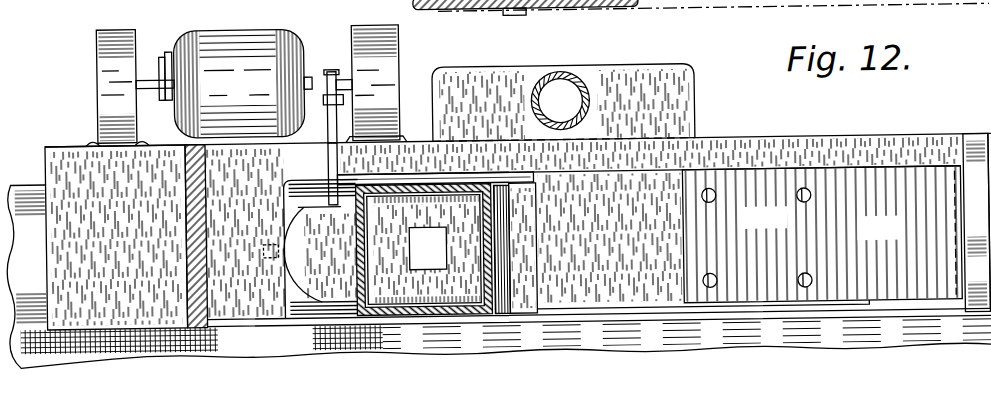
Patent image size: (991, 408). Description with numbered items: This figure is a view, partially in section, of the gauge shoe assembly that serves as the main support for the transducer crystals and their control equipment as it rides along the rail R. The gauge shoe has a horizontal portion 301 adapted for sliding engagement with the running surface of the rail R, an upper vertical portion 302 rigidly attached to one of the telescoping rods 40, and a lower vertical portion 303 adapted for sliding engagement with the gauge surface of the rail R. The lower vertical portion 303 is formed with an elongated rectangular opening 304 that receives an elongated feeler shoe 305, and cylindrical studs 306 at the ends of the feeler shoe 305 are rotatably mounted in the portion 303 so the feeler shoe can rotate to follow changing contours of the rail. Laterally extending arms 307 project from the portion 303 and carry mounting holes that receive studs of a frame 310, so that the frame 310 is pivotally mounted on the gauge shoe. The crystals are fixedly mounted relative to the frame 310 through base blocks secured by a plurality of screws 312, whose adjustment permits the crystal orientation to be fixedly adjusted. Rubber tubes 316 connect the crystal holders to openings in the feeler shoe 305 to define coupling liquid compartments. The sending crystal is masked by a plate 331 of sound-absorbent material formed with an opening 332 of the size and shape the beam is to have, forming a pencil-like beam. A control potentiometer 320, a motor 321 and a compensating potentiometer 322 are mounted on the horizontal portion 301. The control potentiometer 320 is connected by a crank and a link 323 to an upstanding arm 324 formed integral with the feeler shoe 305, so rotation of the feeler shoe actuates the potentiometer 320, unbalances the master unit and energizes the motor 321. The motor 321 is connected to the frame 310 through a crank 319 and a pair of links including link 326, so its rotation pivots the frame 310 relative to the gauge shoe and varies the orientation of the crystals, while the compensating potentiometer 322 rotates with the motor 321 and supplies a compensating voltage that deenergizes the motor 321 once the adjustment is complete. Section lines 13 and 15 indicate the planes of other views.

The rail R is at (8, 190).
The section line 13 is at (427, 10).
The section line 15 is at (528, 5).
The telescoping rod 40 is at (590, 101).
The horizontal portion 301 is at (780, 146).
The upper vertical portion 302 is at (673, 122).
The lower vertical portion 303 is at (245, 322).
The elongated rectangular opening 304 is at (284, 192).
The feeler shoe 305 is at (307, 265).
The cylindrical stud 306 is at (268, 247).
The laterally extending arm 307 is at (974, 150).
The frame 310 is at (861, 250).
The screw 312 is at (716, 207).
The rubber tube 316 is at (412, 191).
The crank 319 is at (169, 99).
The control potentiometer 320 is at (398, 55).
The motor 321 is at (243, 83).
The compensating potentiometer 322 is at (108, 54).
The link 323 is at (337, 102).
The upstanding arm 324 is at (328, 163).
The link 326 is at (158, 68).
The plate of sound-absorbent material 331 is at (392, 290).
The opening 332 is at (443, 243).